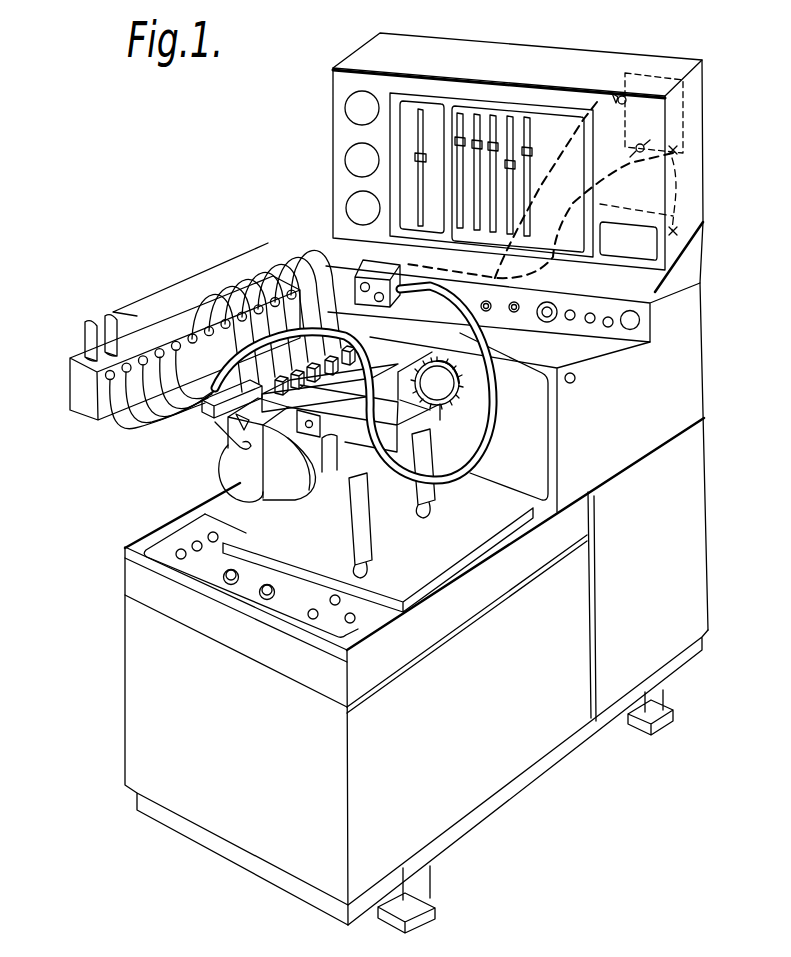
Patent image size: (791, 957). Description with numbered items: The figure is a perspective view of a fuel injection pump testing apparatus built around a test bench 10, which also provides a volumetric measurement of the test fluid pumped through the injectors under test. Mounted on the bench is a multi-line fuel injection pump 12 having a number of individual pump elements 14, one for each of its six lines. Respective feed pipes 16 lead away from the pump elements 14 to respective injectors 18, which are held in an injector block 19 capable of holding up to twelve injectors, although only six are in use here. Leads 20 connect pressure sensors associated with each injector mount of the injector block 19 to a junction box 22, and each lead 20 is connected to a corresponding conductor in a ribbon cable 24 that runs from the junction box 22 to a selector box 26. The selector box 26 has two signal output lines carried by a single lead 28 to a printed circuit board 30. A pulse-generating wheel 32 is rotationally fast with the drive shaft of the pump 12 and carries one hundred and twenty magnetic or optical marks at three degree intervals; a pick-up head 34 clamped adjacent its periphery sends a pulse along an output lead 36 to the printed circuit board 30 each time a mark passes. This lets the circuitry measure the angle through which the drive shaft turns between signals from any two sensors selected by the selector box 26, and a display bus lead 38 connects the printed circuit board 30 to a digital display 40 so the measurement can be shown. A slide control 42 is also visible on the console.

The test bench 10 is at (415, 553).
The multi-line fuel injection pump 12 is at (228, 476).
The pump elements 14 is at (315, 370).
The feed pipes 16 is at (298, 277).
The injectors 18 is at (143, 303).
The injector block 19 is at (83, 393).
The leads 20 is at (147, 430).
The junction box 22 is at (207, 407).
The ribbon cable 24 is at (485, 440).
The selector box 26 is at (378, 270).
The lead 28 is at (573, 273).
The printed circuit board 30 is at (673, 110).
The pulse-generating wheel 32 is at (463, 397).
The pick-up head 34 is at (468, 372).
The output lead 36 is at (602, 100).
The display bus lead 38 is at (673, 173).
The digital display 40 is at (673, 230).
The slide control 42 is at (483, 132).